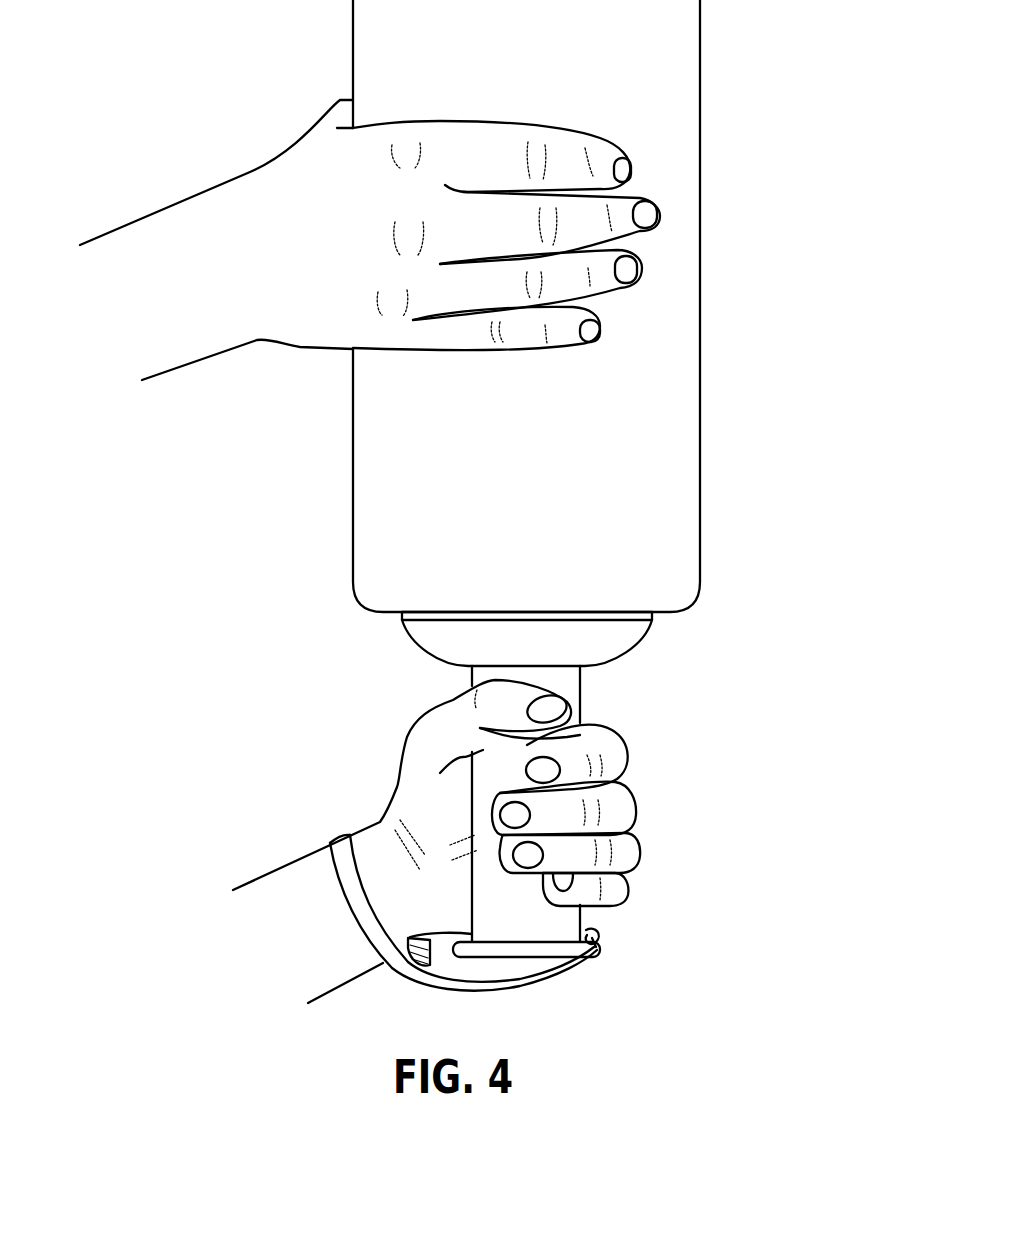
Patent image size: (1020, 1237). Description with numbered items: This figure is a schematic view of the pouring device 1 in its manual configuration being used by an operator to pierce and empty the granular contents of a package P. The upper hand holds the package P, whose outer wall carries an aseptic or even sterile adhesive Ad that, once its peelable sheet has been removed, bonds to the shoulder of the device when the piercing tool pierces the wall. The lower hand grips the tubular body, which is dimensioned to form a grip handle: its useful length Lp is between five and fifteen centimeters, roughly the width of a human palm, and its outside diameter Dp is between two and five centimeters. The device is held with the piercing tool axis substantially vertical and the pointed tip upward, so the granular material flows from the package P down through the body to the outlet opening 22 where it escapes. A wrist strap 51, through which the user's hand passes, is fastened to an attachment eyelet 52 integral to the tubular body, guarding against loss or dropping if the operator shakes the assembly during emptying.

The package P is at (664, 75).
The adhesive Ad is at (645, 615).
The pouring device 1 is at (722, 733).
The outlet opening 22 is at (598, 956).
The wrist strap 51 is at (393, 963).
The attachment eyelet 52 is at (596, 948).
The useful length Lp is at (612, 666).
The outside diameter Dp is at (580, 925).